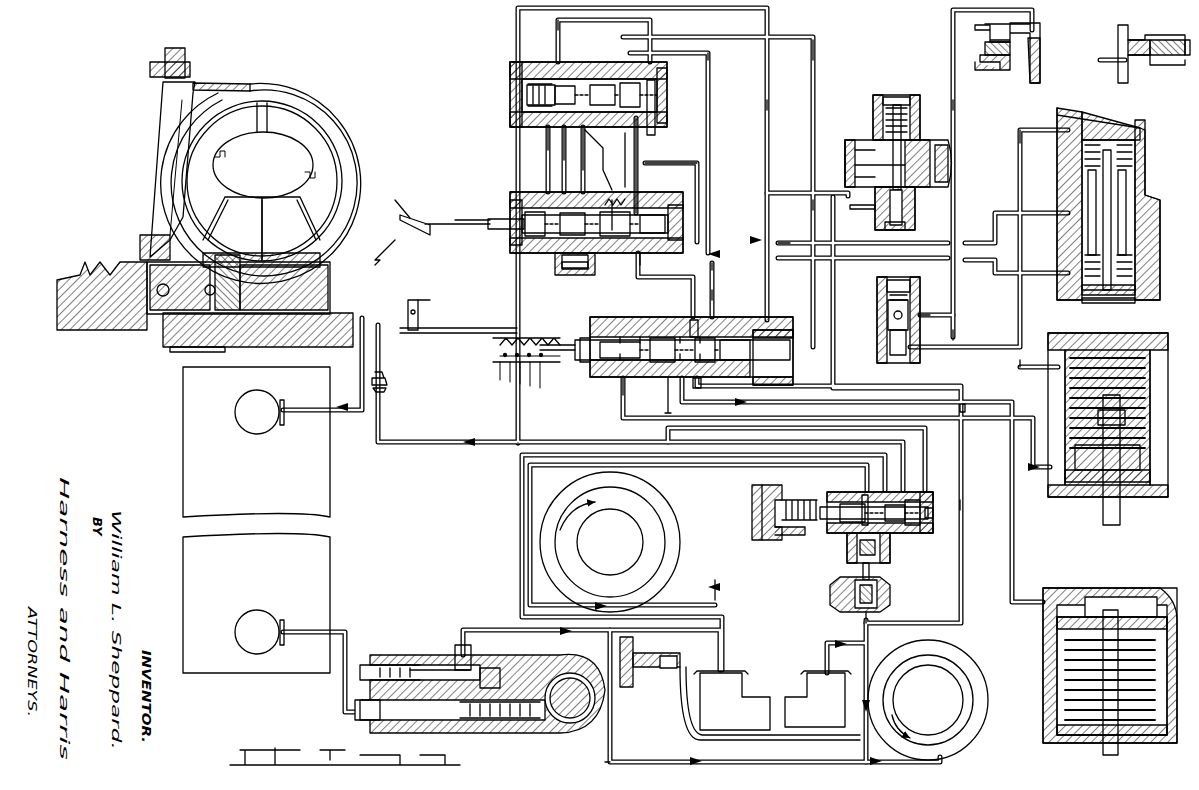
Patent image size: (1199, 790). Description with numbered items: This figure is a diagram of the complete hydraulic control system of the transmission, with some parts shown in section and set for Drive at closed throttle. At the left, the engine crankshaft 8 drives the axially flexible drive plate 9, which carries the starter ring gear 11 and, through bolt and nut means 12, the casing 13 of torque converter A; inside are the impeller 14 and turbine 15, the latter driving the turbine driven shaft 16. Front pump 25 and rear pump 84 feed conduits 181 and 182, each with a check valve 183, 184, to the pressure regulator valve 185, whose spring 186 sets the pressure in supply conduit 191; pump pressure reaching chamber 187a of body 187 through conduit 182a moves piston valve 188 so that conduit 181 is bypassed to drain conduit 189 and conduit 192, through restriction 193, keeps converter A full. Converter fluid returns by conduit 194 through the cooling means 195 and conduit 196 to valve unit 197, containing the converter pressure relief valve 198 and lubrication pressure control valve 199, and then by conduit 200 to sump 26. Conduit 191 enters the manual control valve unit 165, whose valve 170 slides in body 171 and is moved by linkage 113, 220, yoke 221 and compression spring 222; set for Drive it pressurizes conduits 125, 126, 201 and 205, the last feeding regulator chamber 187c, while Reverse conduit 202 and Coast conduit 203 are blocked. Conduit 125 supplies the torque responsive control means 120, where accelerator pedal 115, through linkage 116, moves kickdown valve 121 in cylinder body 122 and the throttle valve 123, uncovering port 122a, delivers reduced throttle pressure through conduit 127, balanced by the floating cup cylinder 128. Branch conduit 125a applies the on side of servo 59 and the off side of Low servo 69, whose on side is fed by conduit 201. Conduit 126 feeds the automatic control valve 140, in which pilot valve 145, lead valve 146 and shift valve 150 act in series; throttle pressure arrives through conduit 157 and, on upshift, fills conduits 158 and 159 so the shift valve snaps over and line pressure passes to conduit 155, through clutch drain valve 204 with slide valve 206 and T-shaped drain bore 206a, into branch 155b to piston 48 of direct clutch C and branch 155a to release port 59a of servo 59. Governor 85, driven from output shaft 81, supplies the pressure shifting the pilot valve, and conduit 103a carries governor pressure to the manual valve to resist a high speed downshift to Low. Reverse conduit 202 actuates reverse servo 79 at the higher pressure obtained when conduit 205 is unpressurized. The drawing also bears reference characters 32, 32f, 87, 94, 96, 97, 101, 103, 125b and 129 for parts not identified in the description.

The hydrokinetic torque converter unit A is at (345, 125).
The engine crankshaft 8 is at (75, 255).
The drive transmitting plate 9 is at (155, 122).
The engine starter ring gear 11 is at (295, 238).
The bolt and nut means 12 is at (255, 240).
The torque converter casing 13 is at (248, 80).
The impeller member 14 is at (330, 185).
The turbine or runner member 15 is at (225, 200).
The turbine driven shaft 16 is at (190, 352).
The base plate 32 is at (292, 335).
The clutch drum 32f is at (1030, 24).
The control piston of direct clutch 48 is at (1040, 42).
The direct clutch C is at (1155, 28).
The servo 59 is at (1145, 122).
The release side port of servo 59a is at (1080, 290).
The Low gear servo 69 is at (1150, 338).
The Reverse band servo 79 is at (1120, 590).
The output shaft 81 is at (860, 140).
The speed sensitive governor 85 is at (873, 100).
The valve stem 87 is at (898, 105).
The shaft 94 is at (890, 160).
The valve body 96 is at (855, 215).
The pressure line 97 is at (780, 195).
The valve seat 101 is at (900, 228).
The line 103 is at (767, 285).
The conduit 103a is at (813, 215).
The control lever linkage 113 is at (430, 298).
The accelerator pedal 115 is at (391, 231).
The linkage 116 is at (455, 230).
The torque responsive control means 120 is at (540, 255).
The kickdown valve 121 is at (505, 212).
The valve cylinder body 122 is at (642, 262).
The line pressure inlet port 122a is at (745, 240).
The throttle valve 123 is at (612, 200).
The supply conduit 125 is at (718, 270).
The branch conduit 125a is at (1020, 143).
The line 125b is at (1020, 355).
The conduit 126 is at (640, 152).
The conduit 127 is at (655, 133).
The floating cup cylinder 128 is at (680, 183).
The valve 129 is at (575, 275).
The automatic control valve mechanism 140 is at (512, 120).
The pilot valve 145 is at (527, 94).
The lead valve 146 is at (545, 138).
The shift valve 150 is at (622, 160).
The conduit 155 is at (815, 52).
The branch conduit 155a is at (950, 350).
The branch conduit 155b is at (955, 100).
The conduit 157 is at (558, 30).
The conduit 158 is at (560, 155).
The conduit 159 is at (580, 170).
The manual control valve unit 165 is at (600, 315).
The manual control valve 170 is at (562, 360).
The manual control valve body 171 is at (700, 330).
The conduit 181 is at (718, 585).
The conduit 182 is at (860, 618).
The conduit 182a is at (870, 572).
The check valve 183 is at (890, 550).
The check valve 184 is at (890, 597).
The pressure regulator valve unit 185 is at (750, 500).
The spring 186 is at (760, 520).
The pressure regulator valve body 187 is at (775, 540).
The chamber 187a is at (925, 500).
The chamber 187c is at (935, 510).
The piston valve 188 is at (835, 540).
The drain conduit 189 is at (862, 495).
The pressure fluid supply conduit 191 is at (666, 388).
The conduit 192 is at (560, 440).
The restriction 193 is at (388, 383).
The conduit 194 is at (360, 420).
The pressure fluid cooling means 195 is at (340, 490).
The conduit 196 is at (350, 630).
The valve unit 197 is at (410, 655).
The pressure relief valve 198 is at (470, 745).
The lubrication system pressure control valve 199 is at (460, 650).
The conduit 200 is at (605, 758).
The control conduit 201 is at (895, 404).
The Reverse drive supply conduit 202 is at (714, 300).
The Coast drive supply conduit 203 is at (620, 412).
The clutch drain valve 204 is at (877, 288).
The control conduit 205 is at (703, 385).
The piston type valve member 206 is at (890, 335).
The T-shaped bore 206a is at (925, 322).
The control lever linkage 220 is at (425, 328).
The yoke 221 is at (548, 338).
The compression spring 222 is at (498, 365).
The front pump 25 is at (625, 550).
The supply sump 26 is at (690, 718).
The rear pump 84 is at (945, 708).